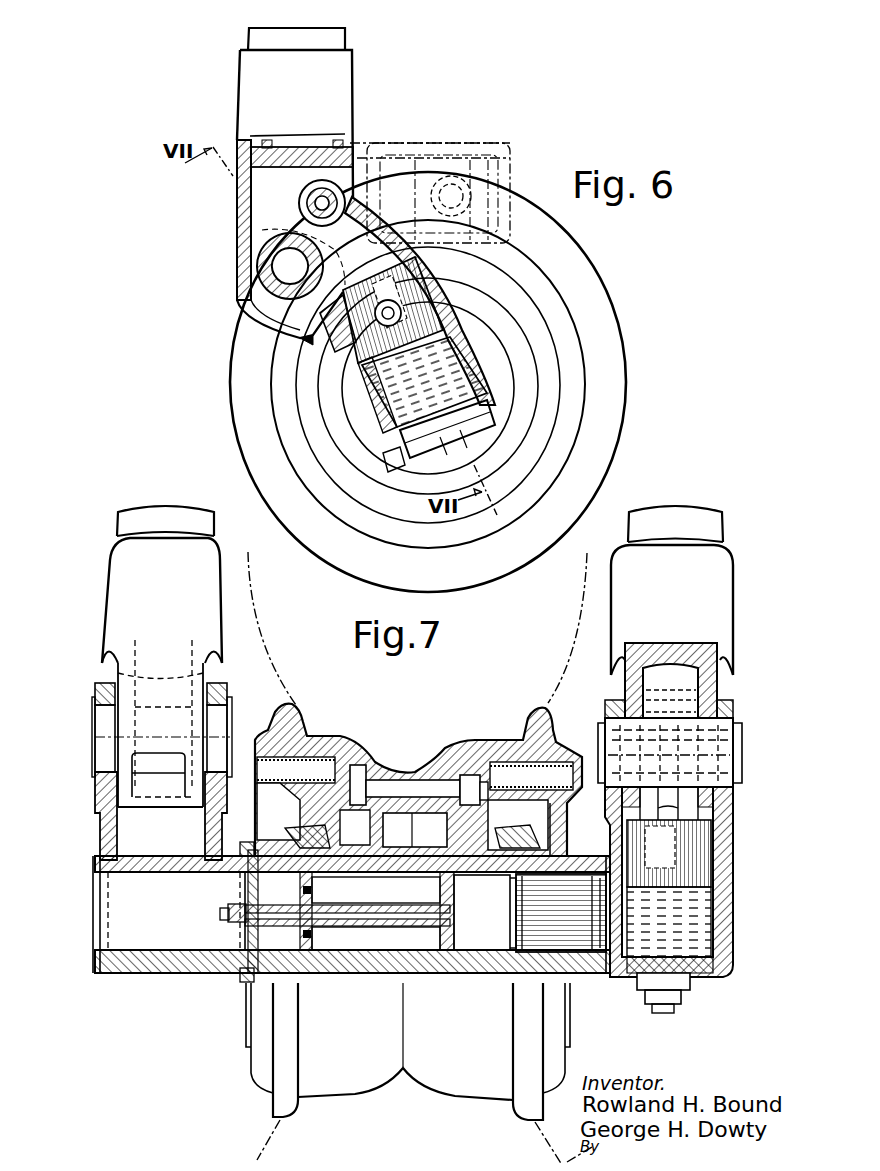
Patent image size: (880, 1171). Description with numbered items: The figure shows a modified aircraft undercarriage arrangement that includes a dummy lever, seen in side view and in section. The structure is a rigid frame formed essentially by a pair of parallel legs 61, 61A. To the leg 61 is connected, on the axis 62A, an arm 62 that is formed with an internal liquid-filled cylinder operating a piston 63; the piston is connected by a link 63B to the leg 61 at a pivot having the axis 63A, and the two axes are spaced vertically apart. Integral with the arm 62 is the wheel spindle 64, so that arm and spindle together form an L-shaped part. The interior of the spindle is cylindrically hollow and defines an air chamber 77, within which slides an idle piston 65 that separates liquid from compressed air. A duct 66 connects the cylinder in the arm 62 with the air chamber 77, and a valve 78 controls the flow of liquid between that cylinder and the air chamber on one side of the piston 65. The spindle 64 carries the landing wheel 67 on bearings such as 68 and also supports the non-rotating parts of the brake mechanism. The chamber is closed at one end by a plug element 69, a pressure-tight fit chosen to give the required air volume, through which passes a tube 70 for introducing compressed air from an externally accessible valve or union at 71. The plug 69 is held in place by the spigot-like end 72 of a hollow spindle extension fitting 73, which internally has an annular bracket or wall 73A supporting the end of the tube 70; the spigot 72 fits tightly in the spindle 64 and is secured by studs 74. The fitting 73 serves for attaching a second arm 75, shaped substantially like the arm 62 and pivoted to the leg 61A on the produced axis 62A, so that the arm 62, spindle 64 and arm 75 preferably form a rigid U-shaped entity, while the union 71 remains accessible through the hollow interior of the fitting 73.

In FIG. 6, the leg 61 is at (345, 88).
In FIG. 7, the leg 61 is at (688, 525).
In FIG. 7, the leg 61A is at (168, 484).
In FIG. 6, the arm 62 is at (370, 372).
In FIG. 7, the arm 62 is at (718, 900).
In FIG. 6, the axis 62A is at (290, 267).
In FIG. 7, the axis 62A is at (228, 745).
In FIG. 6, the piston 63 is at (410, 320).
In FIG. 7, the piston 63 is at (690, 838).
In FIG. 6, the axis 63A is at (318, 203).
In FIG. 7, the axis 63A is at (616, 722).
In FIG. 6, the link 63B is at (318, 333).
In FIG. 7, the link 63B is at (712, 800).
In FIG. 6, the wheel spindle 64 is at (470, 372).
In FIG. 7, the wheel spindle 64 is at (398, 976).
In FIG. 7, the idle piston 65 is at (502, 976).
In FIG. 7, the duct 66 is at (632, 977).
In FIG. 6, the landing wheel 67 is at (522, 416).
In FIG. 7, the landing wheel 67 is at (420, 745).
In FIG. 7, the bearings 68 is at (320, 830).
In FIG. 7, the plug element 69 is at (460, 960).
In FIG. 7, the tube 70 is at (368, 930).
In FIG. 7, the valve or union 71 is at (232, 905).
In FIG. 7, the spigot-like end 72 is at (288, 966).
In FIG. 7, the spindle extension fitting 73 is at (143, 952).
In FIG. 7, the annular bracket or wall 73A is at (240, 922).
In FIG. 7, the studs 74 is at (252, 846).
In FIG. 7, the second arm 75 is at (104, 832).
In FIG. 7, the air chamber 77 is at (493, 913).
In FIG. 7, the valve 78 is at (688, 982).